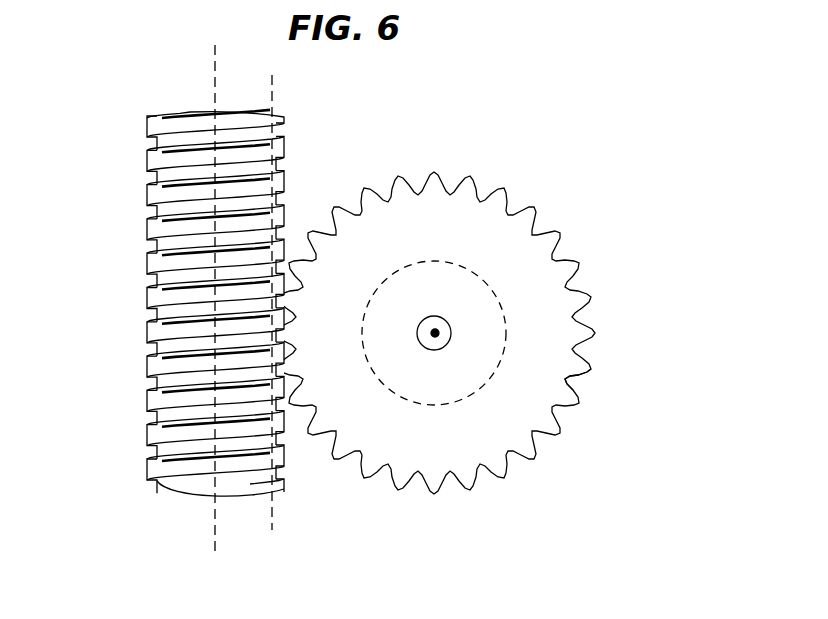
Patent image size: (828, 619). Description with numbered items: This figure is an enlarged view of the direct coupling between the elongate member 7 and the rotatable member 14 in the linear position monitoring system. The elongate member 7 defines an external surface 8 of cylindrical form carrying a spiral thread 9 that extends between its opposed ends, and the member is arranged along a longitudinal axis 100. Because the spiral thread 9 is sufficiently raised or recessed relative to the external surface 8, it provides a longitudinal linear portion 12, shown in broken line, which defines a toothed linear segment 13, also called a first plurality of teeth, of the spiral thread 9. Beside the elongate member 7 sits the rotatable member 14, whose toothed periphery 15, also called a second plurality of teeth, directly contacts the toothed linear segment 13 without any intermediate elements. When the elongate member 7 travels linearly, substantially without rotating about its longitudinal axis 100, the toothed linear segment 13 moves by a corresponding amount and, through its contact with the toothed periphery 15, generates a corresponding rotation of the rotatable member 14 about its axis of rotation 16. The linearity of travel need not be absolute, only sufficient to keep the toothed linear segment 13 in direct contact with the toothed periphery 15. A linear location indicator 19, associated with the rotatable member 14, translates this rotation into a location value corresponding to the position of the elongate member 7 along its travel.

The elongate member 7 is at (200, 303).
The external surface 8 is at (156, 178).
The spiral thread 9 is at (148, 197).
The longitudinal axis 100 is at (211, 287).
The longitudinal linear portion 12 is at (277, 94).
The toothed linear segment 13 is at (286, 150).
The rotatable member 14 is at (553, 308).
The toothed periphery 15 is at (588, 374).
The linear location indicator 19 is at (462, 265).
The axis of rotation 16 is at (437, 334).